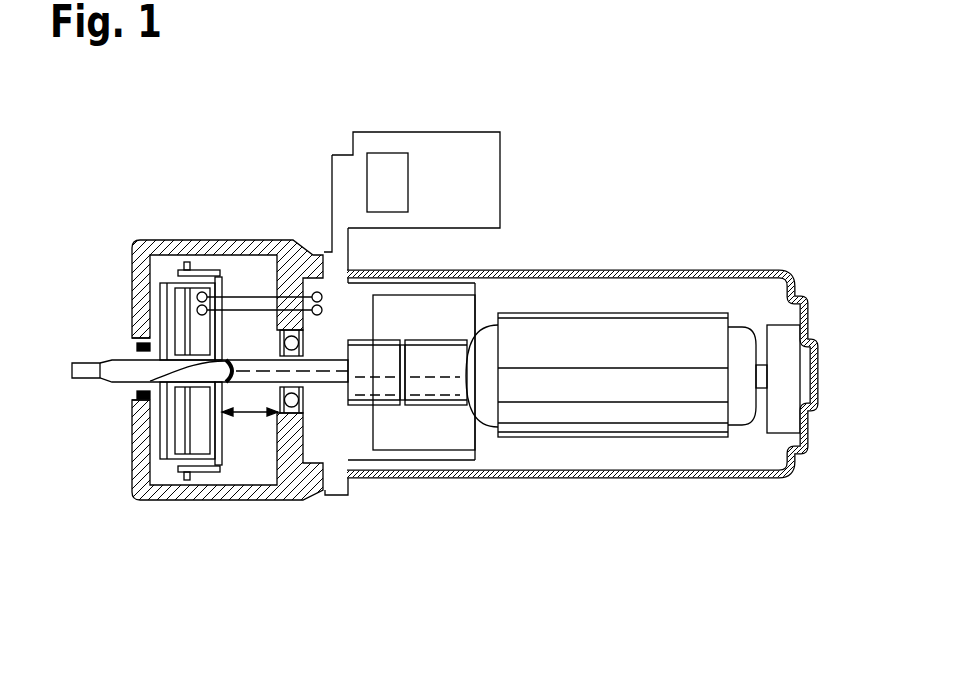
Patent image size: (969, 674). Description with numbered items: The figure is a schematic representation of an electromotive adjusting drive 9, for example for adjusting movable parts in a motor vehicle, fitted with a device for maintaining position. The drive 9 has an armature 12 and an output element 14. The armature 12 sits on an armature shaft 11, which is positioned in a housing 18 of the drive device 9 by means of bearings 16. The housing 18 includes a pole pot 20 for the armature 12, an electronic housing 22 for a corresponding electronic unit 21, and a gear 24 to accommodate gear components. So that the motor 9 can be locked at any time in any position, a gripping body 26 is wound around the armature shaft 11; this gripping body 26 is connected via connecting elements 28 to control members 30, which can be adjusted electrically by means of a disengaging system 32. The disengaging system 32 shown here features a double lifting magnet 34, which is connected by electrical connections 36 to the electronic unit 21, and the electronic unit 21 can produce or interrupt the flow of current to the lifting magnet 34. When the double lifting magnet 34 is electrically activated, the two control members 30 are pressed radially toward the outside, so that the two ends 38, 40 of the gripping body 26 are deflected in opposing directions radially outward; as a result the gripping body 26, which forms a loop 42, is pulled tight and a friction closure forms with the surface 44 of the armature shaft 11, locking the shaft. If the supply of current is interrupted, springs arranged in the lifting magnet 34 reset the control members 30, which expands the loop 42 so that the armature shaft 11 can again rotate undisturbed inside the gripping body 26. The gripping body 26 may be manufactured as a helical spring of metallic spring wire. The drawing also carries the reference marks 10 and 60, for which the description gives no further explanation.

The electromotive adjusting drive 9 is at (664, 512).
The sensor arrangement 10 is at (233, 259).
The armature shaft 11 is at (333, 386).
The armature 12 is at (668, 328).
The output element 14 is at (84, 366).
The bearings 16 is at (794, 337).
The housing 18 is at (509, 494).
The pole pot 20 is at (758, 479).
The electronic unit 21 is at (390, 163).
The electronic housing 22 is at (487, 206).
The gear 24 is at (287, 499).
The gripping body 26 is at (233, 390).
The connecting elements 28 is at (199, 272).
The control members 30 is at (186, 262).
The disengaging system 32 is at (136, 460).
The double lifting magnet 34 is at (168, 293).
The electrical connections 36 is at (264, 292).
The end of the gripping body 38 is at (214, 464).
The end of the gripping body 40 is at (253, 326).
The loop 42 is at (136, 387).
The surface of the armature shaft 44 is at (255, 373).
The axial gap 60 is at (271, 420).